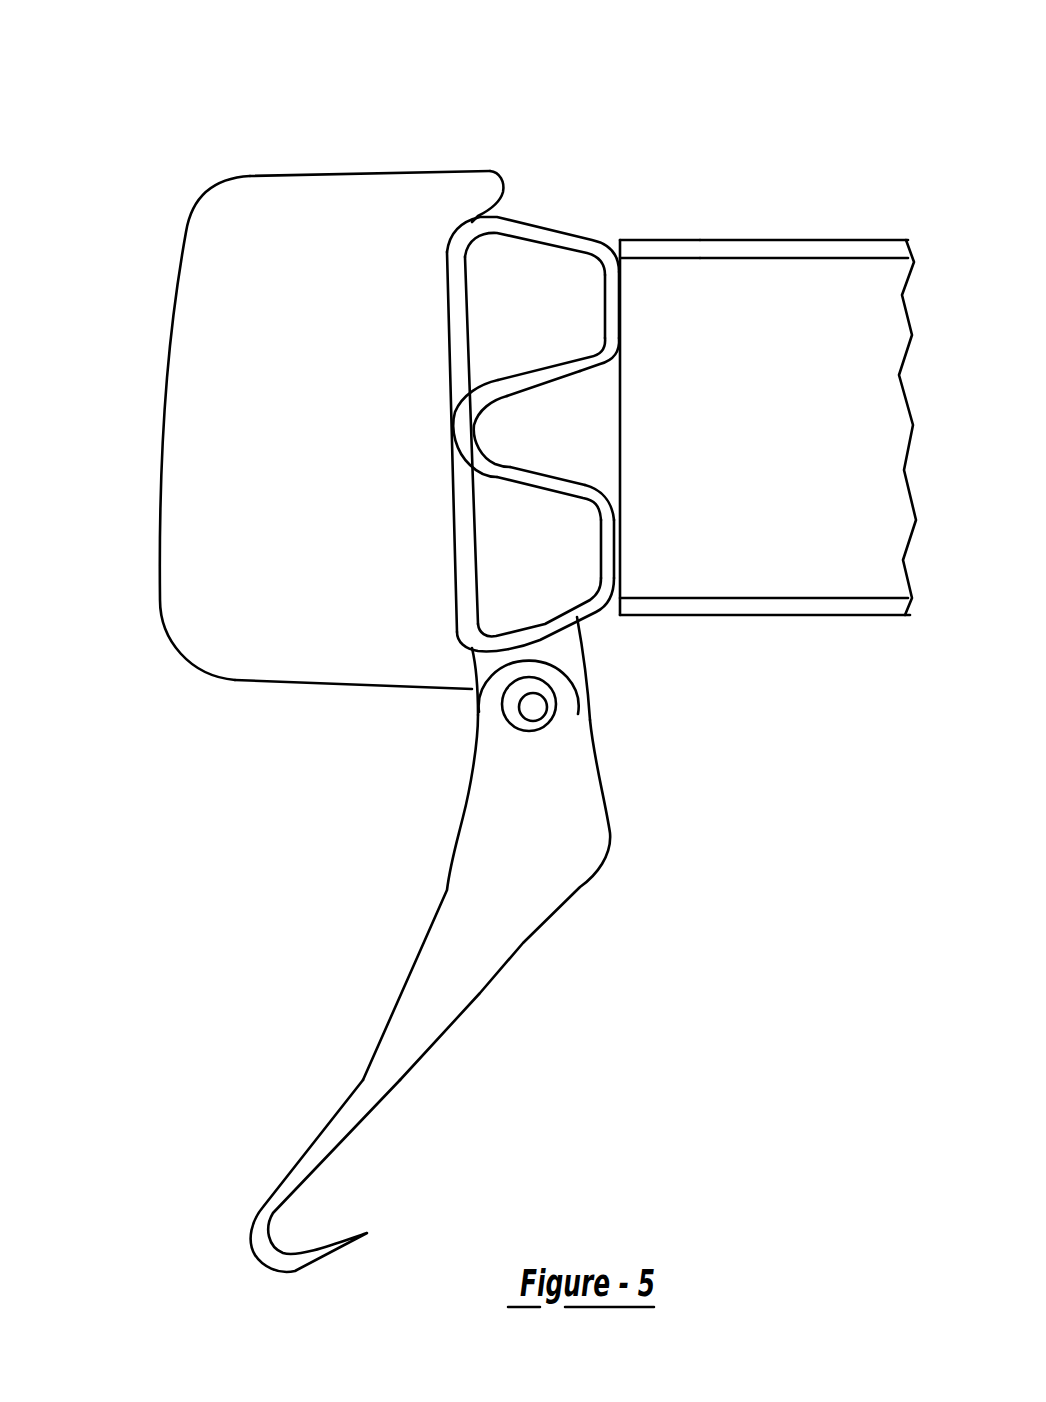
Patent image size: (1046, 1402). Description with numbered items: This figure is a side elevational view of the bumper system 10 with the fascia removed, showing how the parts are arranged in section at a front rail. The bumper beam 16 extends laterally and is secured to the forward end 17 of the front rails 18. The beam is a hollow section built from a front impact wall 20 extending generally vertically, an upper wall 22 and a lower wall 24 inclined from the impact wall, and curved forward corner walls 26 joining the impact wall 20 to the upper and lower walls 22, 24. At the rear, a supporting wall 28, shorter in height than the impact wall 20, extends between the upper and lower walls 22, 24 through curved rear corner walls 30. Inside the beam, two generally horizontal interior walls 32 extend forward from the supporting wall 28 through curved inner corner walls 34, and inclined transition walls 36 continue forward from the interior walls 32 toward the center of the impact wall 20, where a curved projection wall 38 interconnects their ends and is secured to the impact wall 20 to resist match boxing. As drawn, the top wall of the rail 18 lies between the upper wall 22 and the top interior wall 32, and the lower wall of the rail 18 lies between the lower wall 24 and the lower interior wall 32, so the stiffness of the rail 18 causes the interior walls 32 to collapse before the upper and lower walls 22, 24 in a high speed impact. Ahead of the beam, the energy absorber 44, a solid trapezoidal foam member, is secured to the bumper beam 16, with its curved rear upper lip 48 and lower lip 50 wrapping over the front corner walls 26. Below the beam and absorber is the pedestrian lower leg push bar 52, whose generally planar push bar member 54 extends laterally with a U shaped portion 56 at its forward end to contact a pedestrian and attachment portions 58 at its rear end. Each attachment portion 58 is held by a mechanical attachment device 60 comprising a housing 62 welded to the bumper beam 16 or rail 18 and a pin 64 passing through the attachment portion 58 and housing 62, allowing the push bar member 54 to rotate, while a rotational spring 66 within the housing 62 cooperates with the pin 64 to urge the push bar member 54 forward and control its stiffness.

The bumper system 10 is at (156, 145).
The bumper beam 16 is at (571, 234).
The forward end 17 is at (617, 242).
The front rails 18 is at (817, 273).
The impact wall 20 is at (453, 292).
The upper wall 22 is at (505, 223).
The lower wall 24 is at (552, 633).
The forward corner wall 26 is at (473, 230).
The supporting wall 28 is at (613, 295).
The rear corner wall 30 is at (596, 255).
The interior walls 32 is at (553, 487).
The inner corner wall 34 is at (610, 352).
The transition wall 36 is at (502, 390).
The projection wall 38 is at (460, 430).
The energy absorber 44 is at (327, 207).
The upper lip 48 is at (503, 190).
The lower lip 50 is at (467, 678).
The pedestrian lower leg push bar 52 is at (477, 958).
The push bar member 54 is at (417, 1038).
The U shaped portion 56 is at (257, 1243).
The attachment portions 58 is at (562, 732).
The mechanical attachment devices 60 is at (562, 698).
The housing 62 is at (573, 668).
The pin 64 is at (527, 712).
The springs 66 is at (536, 725).